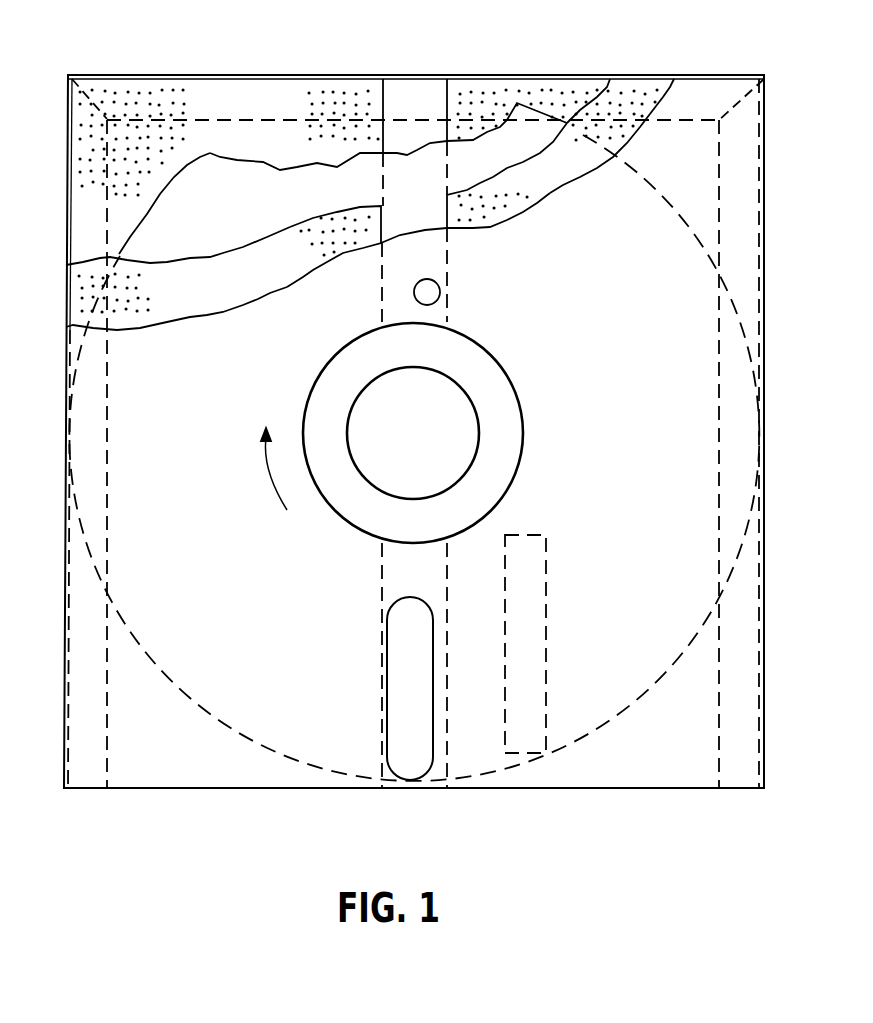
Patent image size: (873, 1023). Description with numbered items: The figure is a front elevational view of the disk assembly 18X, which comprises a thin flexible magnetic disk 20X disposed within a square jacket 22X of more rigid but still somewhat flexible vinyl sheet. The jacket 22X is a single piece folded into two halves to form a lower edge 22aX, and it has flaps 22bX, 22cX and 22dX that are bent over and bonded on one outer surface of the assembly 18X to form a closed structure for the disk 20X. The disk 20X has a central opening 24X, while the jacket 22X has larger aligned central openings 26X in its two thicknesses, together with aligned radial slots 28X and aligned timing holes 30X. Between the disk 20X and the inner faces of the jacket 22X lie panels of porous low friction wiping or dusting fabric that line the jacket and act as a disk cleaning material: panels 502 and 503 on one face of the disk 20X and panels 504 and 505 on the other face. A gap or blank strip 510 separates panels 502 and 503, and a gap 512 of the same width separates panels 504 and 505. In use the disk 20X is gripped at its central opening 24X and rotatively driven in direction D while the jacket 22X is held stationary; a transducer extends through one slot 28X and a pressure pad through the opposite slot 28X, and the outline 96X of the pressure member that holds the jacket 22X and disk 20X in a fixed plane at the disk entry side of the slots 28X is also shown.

The disk assembly 18X is at (100, 75).
The magnetic disk 20X is at (239, 218).
The jacket 22X is at (762, 735).
The lower edge 22aX is at (212, 789).
The flap 22bX is at (107, 733).
The flap 22cX is at (703, 124).
The flap 22dX is at (717, 735).
The central opening 24X is at (468, 393).
The central openings 26X is at (320, 372).
The radial slots 28X is at (390, 675).
The timing holes 30X is at (440, 282).
The outline of pressure member 96X is at (547, 650).
The low friction wiper panel 502 is at (317, 252).
The low friction wiper panel 503 is at (600, 107).
The low friction wiper panel 504 is at (163, 98).
The low friction wiper panel 505 is at (495, 92).
The gap 510 is at (408, 210).
The gap 512 is at (429, 93).
The direction of rotation D is at (268, 481).